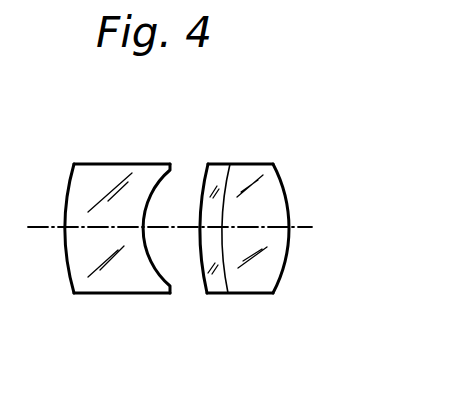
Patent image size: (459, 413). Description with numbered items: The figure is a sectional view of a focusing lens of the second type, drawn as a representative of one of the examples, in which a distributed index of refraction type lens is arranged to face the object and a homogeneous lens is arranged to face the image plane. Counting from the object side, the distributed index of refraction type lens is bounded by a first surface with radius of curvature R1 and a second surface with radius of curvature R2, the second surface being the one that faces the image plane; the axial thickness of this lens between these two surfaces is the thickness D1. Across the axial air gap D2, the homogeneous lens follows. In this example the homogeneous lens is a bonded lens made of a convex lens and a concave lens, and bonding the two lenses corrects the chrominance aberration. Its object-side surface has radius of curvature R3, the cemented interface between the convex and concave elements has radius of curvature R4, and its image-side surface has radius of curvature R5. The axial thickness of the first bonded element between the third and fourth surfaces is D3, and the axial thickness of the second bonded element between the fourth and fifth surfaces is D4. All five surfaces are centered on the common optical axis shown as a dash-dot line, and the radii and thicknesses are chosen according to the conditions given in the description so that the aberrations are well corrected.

The axial thickness of the first surface to second surface D1 is at (102, 221).
The axial air gap between the second surface and third surface D2 is at (184, 223).
The axial thickness between the third surface and fourth surface D3 is at (211, 222).
The axial thickness between the fourth surface and fifth surface D4 is at (253, 224).
The radius of curvature of the first lens surface R1 is at (70, 278).
The radius of curvature of the second lens surface R2 is at (157, 273).
The radius of curvature of the third lens surface R3 is at (203, 278).
The radius of curvature of the fourth lens surface R4 is at (222, 280).
The radius of curvature of the fifth lens surface R5 is at (273, 278).